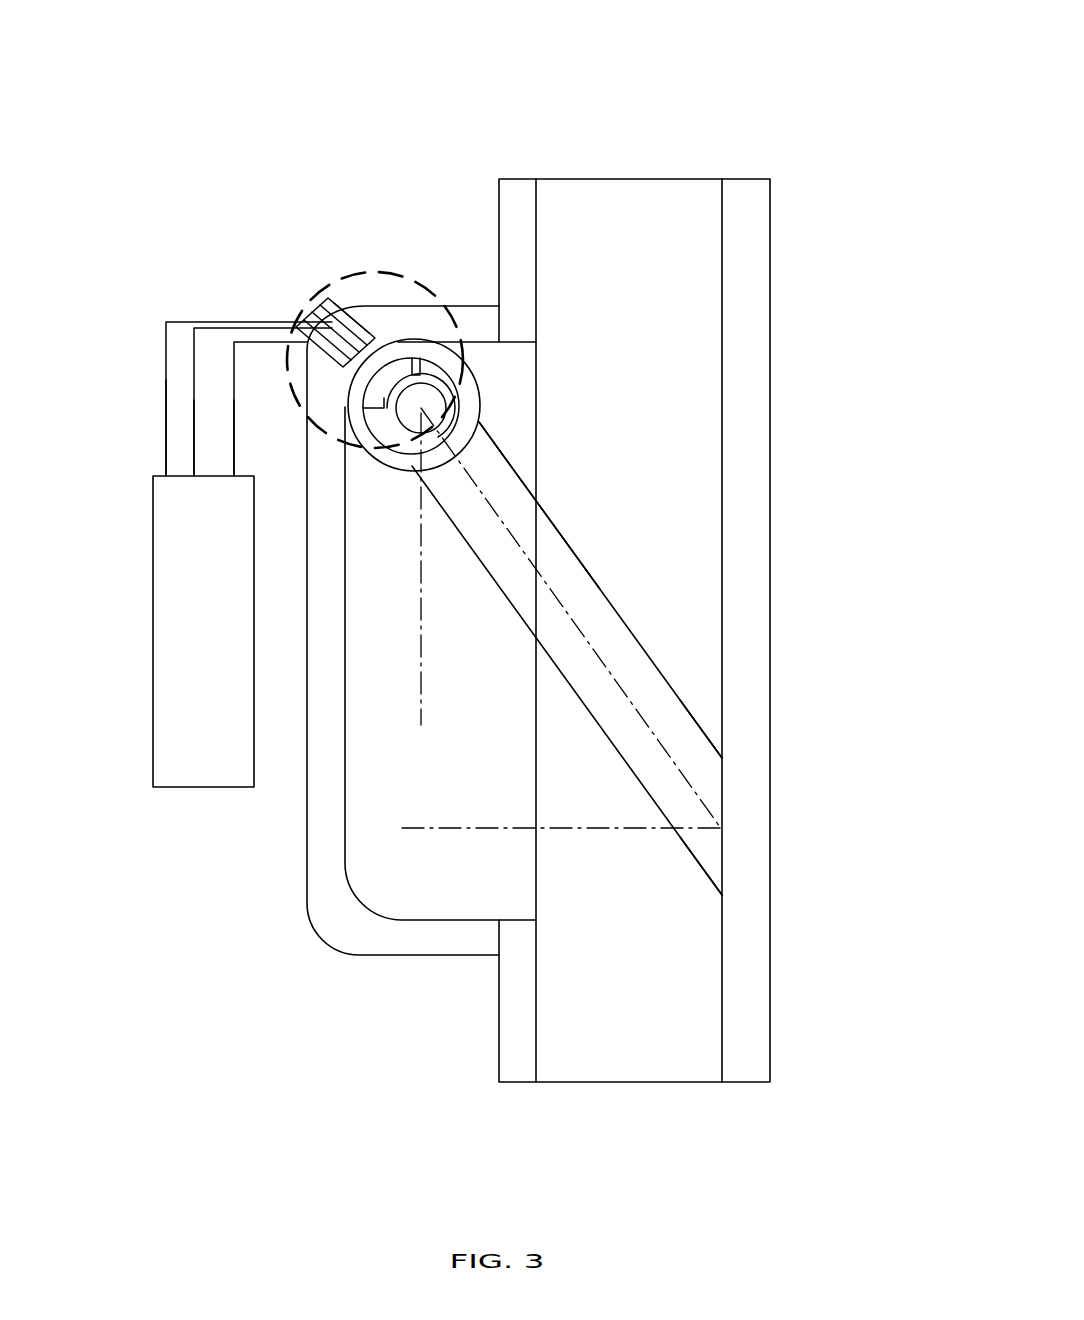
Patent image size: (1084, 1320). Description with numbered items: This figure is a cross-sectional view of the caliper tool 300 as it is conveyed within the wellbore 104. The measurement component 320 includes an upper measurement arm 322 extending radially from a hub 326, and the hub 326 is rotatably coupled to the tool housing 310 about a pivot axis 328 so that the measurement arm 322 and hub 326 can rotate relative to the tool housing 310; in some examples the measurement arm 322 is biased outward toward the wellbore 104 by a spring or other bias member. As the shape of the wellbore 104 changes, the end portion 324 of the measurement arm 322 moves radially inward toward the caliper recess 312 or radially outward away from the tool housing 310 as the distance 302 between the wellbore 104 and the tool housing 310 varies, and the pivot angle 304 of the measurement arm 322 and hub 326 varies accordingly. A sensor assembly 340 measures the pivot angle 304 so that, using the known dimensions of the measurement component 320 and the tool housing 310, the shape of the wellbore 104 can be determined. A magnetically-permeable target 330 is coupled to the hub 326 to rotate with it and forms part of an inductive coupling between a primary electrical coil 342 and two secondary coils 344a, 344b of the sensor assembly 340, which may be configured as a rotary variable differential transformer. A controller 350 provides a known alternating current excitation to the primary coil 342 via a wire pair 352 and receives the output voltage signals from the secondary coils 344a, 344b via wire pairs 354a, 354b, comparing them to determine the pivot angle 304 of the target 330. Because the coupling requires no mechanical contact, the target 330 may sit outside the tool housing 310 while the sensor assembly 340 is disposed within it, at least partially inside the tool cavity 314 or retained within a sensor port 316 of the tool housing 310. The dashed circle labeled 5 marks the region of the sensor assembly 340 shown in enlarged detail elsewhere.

The caliper tool 300 is at (873, 33).
The tool housing 310 is at (518, 190).
The wellbore 104 is at (722, 438).
The caliper recess 312 is at (345, 865).
The tool cavity 314 is at (428, 222).
The sensor port 316 is at (358, 345).
The measurement component 320 is at (652, 656).
The upper measurement arm 322 is at (560, 547).
The end portion 324 is at (722, 788).
The hub 326 is at (480, 407).
The pivot axis 328 is at (440, 432).
The magnetically-permeable target 330 is at (372, 398).
The sensor assembly 340 is at (320, 292).
The primary electrical coil 342 is at (312, 292).
The first secondary coil 344a is at (297, 323).
The second secondary coil 344b is at (347, 300).
The controller 350 is at (163, 549).
The wire pair 352 is at (193, 424).
The first wire pair 354a is at (166, 407).
The second wire pair 354b is at (233, 449).
The distance 302 is at (650, 828).
The pivot angle 304 is at (560, 605).
The detail view circle 5 is at (383, 360).